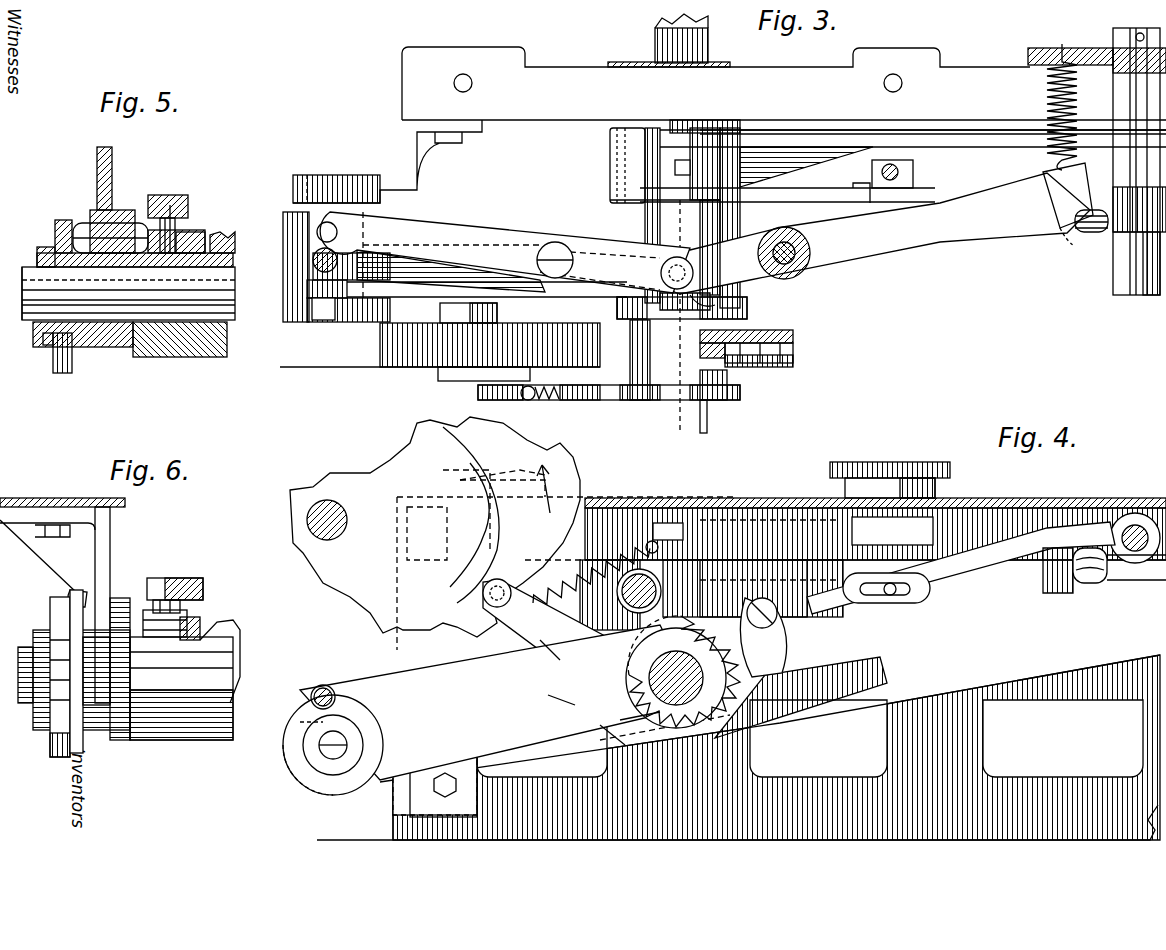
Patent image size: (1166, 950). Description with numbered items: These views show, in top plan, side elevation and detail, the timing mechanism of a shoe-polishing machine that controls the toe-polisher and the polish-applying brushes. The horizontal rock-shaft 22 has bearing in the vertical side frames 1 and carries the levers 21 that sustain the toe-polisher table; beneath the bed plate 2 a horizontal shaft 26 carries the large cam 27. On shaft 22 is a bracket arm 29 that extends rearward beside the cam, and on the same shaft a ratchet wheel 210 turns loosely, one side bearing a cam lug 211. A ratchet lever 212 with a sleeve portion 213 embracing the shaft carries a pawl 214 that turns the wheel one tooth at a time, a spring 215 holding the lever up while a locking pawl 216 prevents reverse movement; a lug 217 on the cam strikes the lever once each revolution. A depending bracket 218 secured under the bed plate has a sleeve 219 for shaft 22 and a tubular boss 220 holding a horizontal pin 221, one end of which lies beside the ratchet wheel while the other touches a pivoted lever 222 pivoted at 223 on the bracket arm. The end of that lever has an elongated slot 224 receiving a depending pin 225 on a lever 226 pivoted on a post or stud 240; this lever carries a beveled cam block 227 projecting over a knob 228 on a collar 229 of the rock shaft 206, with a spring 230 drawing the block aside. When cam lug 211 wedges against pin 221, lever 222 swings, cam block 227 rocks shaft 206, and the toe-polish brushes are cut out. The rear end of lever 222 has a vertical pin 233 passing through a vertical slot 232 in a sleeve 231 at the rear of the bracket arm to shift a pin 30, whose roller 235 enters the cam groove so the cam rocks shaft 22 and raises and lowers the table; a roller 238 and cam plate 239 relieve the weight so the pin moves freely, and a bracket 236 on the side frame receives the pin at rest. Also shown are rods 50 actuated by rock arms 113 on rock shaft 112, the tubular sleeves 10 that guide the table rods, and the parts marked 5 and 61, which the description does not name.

In FIG. 3, the side frames 1 is at (729, 125).
In FIG. 4, the side frames 1 is at (975, 728).
In FIG. 6, the bed plate 2 is at (45, 496).
In FIG. 4, the bed plate 2 is at (1045, 498).
In FIG. 3, the shaft 5 is at (681, 230).
In FIG. 4, the tubular sleeves 10 is at (310, 640).
In FIG. 3, the levers 21 is at (1000, 140).
In FIG. 4, the levers 21 is at (796, 696).
In FIG. 3, the rock-shaft 22 is at (708, 427).
In FIG. 5, the rock-shaft 22 is at (225, 292).
In FIG. 6, the rock-shaft 22 is at (23, 647).
In FIG. 4, the rock-shaft 22 is at (617, 705).
In FIG. 4, the horizontal shaft 26 is at (325, 515).
In FIG. 3, the cam 27 is at (268, 368).
In FIG. 4, the cam 27 is at (348, 475).
In FIG. 3, the bracket arm 29 is at (427, 272).
In FIG. 4, the bracket arm 29 is at (500, 702).
In FIG. 3, the pin 30 is at (358, 320).
In FIG. 3, the rods 50 is at (905, 170).
In FIG. 4, the knob 61 is at (860, 465).
In FIG. 3, the rock shaft 112 is at (628, 212).
In FIG. 4, the rock shaft 112 is at (650, 580).
In FIG. 3, the rock arms 113 is at (820, 196).
In FIG. 4, the rock arms 113 is at (840, 600).
In FIG. 3, the rock shaft 206 is at (1143, 233).
In FIG. 4, the rock shaft 206 is at (1135, 525).
In FIG. 3, the ratchet wheel 210 is at (712, 386).
In FIG. 5, the ratchet wheel 210 is at (65, 362).
In FIG. 6, the ratchet wheel 210 is at (65, 742).
In FIG. 4, the ratchet wheel 210 is at (628, 722).
In FIG. 3, the cam lug 211 is at (748, 362).
In FIG. 6, the cam lug 211 is at (80, 725).
In FIG. 4, the cam lug 211 is at (801, 697).
In FIG. 3, the ratchet lever 212 is at (603, 398).
In FIG. 4, the ratchet lever 212 is at (540, 655).
In FIG. 5, the sleeve portion 213 is at (45, 345).
In FIG. 4, the sleeve portion 213 is at (623, 723).
In FIG. 3, the pawl 214 is at (572, 384).
In FIG. 4, the pawl 214 is at (548, 700).
In FIG. 3, the spring 215 is at (524, 398).
In FIG. 4, the spring 215 is at (603, 567).
In FIG. 3, the locking pawl 216 is at (793, 364).
In FIG. 6, the locking pawl 216 is at (75, 590).
In FIG. 4, the locking pawl 216 is at (780, 656).
In FIG. 3, the lug 217 is at (462, 372).
In FIG. 4, the lug 217 is at (465, 578).
In FIG. 3, the depending bracket 218 is at (790, 338).
In FIG. 5, the depending bracket 218 is at (113, 162).
In FIG. 6, the depending bracket 218 is at (112, 535).
In FIG. 4, the depending bracket 218 is at (720, 505).
In FIG. 3, the sleeve 219 is at (628, 316).
In FIG. 5, the sleeve 219 is at (120, 345).
In FIG. 6, the sleeve 219 is at (112, 710).
In FIG. 3, the tubular boss 220 is at (725, 320).
In FIG. 5, the tubular boss 220 is at (118, 215).
In FIG. 6, the tubular boss 220 is at (100, 600).
In FIG. 3, the pin 221 is at (745, 302).
In FIG. 5, the pin 221 is at (125, 230).
In FIG. 6, the pin 221 is at (123, 623).
In FIG. 4, the pin 221 is at (684, 671).
In FIG. 3, the pivoted lever 222 is at (487, 233).
In FIG. 5, the pivoted lever 222 is at (195, 245).
In FIG. 6, the pivoted lever 222 is at (205, 625).
In FIG. 4, the pivoted lever 222 is at (455, 648).
In FIG. 3, the pivot 223 is at (538, 258).
In FIG. 3, the elongated slot 224 is at (511, 256).
In FIG. 5, the elongated slot 224 is at (180, 238).
In FIG. 6, the elongated slot 224 is at (180, 640).
In FIG. 3, the depending pin 225 is at (693, 273).
In FIG. 5, the depending pin 225 is at (185, 205).
In FIG. 6, the depending pin 225 is at (205, 598).
In FIG. 3, the lever 226 is at (877, 228).
In FIG. 5, the lever 226 is at (180, 205).
In FIG. 6, the lever 226 is at (195, 577).
In FIG. 4, the lever 226 is at (918, 575).
In FIG. 3, the beveled cam block 227 is at (1060, 226).
In FIG. 4, the beveled cam block 227 is at (1057, 588).
In FIG. 3, the knob 228 is at (1090, 236).
In FIG. 4, the knob 228 is at (1090, 590).
In FIG. 3, the collar 229 is at (1125, 262).
In FIG. 4, the collar 229 is at (1150, 563).
In FIG. 3, the spring 230 is at (1046, 96).
In FIG. 5, the sleeve 231 is at (285, 233).
In FIG. 4, the sleeve 231 is at (305, 790).
In FIG. 3, the vertical slot 232 is at (325, 260).
In FIG. 5, the vertical slot 232 is at (288, 268).
In FIG. 3, the vertical pin 233 is at (338, 232).
In FIG. 4, the vertical pin 233 is at (300, 727).
In FIG. 4, the roller 235 is at (310, 752).
In FIG. 3, the bracket 236 is at (386, 182).
In FIG. 3, the roller 238 is at (320, 307).
In FIG. 4, the roller 238 is at (325, 690).
In FIG. 3, the cam plate 239 is at (440, 313).
In FIG. 4, the cam plate 239 is at (420, 487).
In FIG. 3, the depending post or stud 240 is at (790, 240).
In FIG. 4, the depending post or stud 240 is at (800, 553).